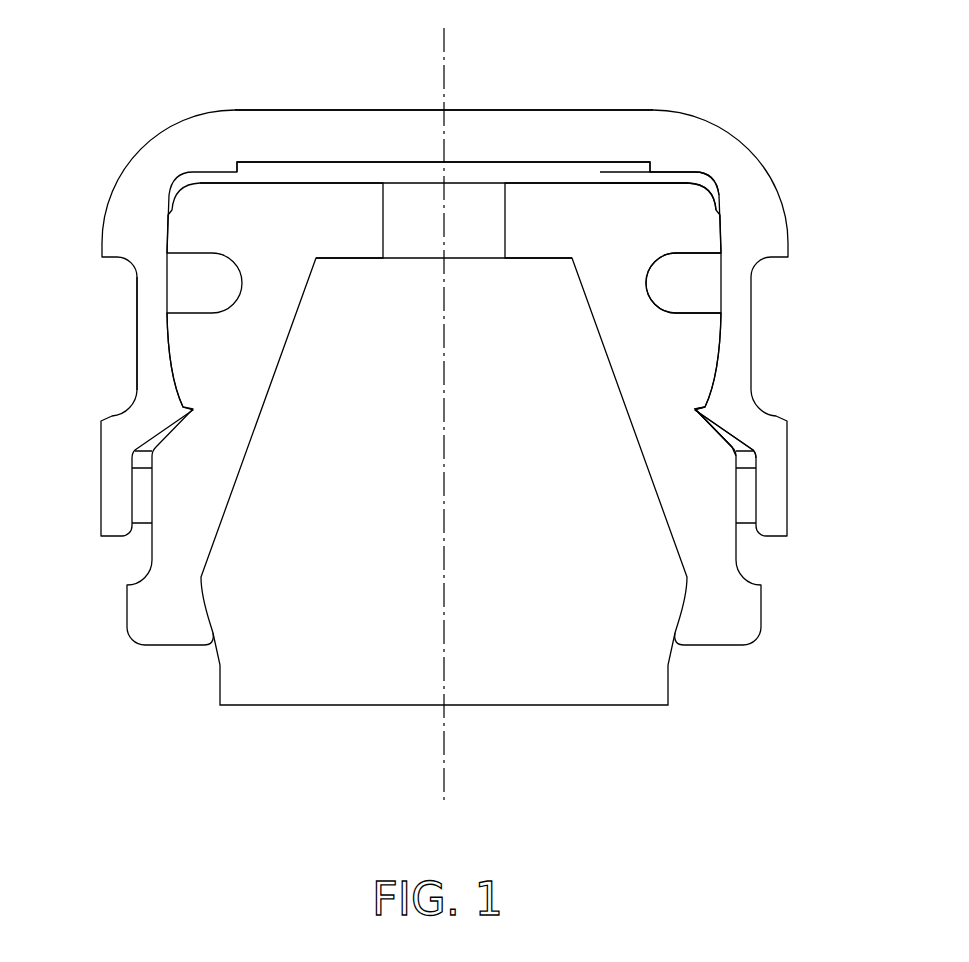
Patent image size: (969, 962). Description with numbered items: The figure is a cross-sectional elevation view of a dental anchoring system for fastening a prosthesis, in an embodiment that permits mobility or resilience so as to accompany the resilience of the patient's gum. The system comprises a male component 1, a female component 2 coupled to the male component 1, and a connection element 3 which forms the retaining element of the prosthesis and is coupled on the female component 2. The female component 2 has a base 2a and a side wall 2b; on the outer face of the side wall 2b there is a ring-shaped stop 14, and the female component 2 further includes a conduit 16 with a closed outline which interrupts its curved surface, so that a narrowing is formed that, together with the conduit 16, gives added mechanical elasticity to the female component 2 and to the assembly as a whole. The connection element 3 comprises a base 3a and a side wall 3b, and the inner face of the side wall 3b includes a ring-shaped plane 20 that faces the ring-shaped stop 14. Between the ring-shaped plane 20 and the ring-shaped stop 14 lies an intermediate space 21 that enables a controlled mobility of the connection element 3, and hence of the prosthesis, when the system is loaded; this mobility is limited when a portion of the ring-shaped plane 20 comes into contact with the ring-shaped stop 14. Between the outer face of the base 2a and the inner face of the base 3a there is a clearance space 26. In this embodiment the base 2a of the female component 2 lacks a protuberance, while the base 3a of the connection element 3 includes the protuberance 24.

The male component 1 is at (627, 707).
The female component 2 is at (760, 628).
The base 2a is at (333, 222).
The side wall 2b is at (205, 338).
The connection element 3 is at (789, 492).
The base 3a is at (582, 128).
The side wall 3b is at (152, 312).
The ring-shaped stop 14 is at (732, 435).
The conduit 16 is at (693, 287).
The ring-shaped plane 20 is at (710, 430).
The intermediate space 21 is at (740, 447).
The opening 24 is at (260, 165).
The clearance space 26 is at (665, 178).